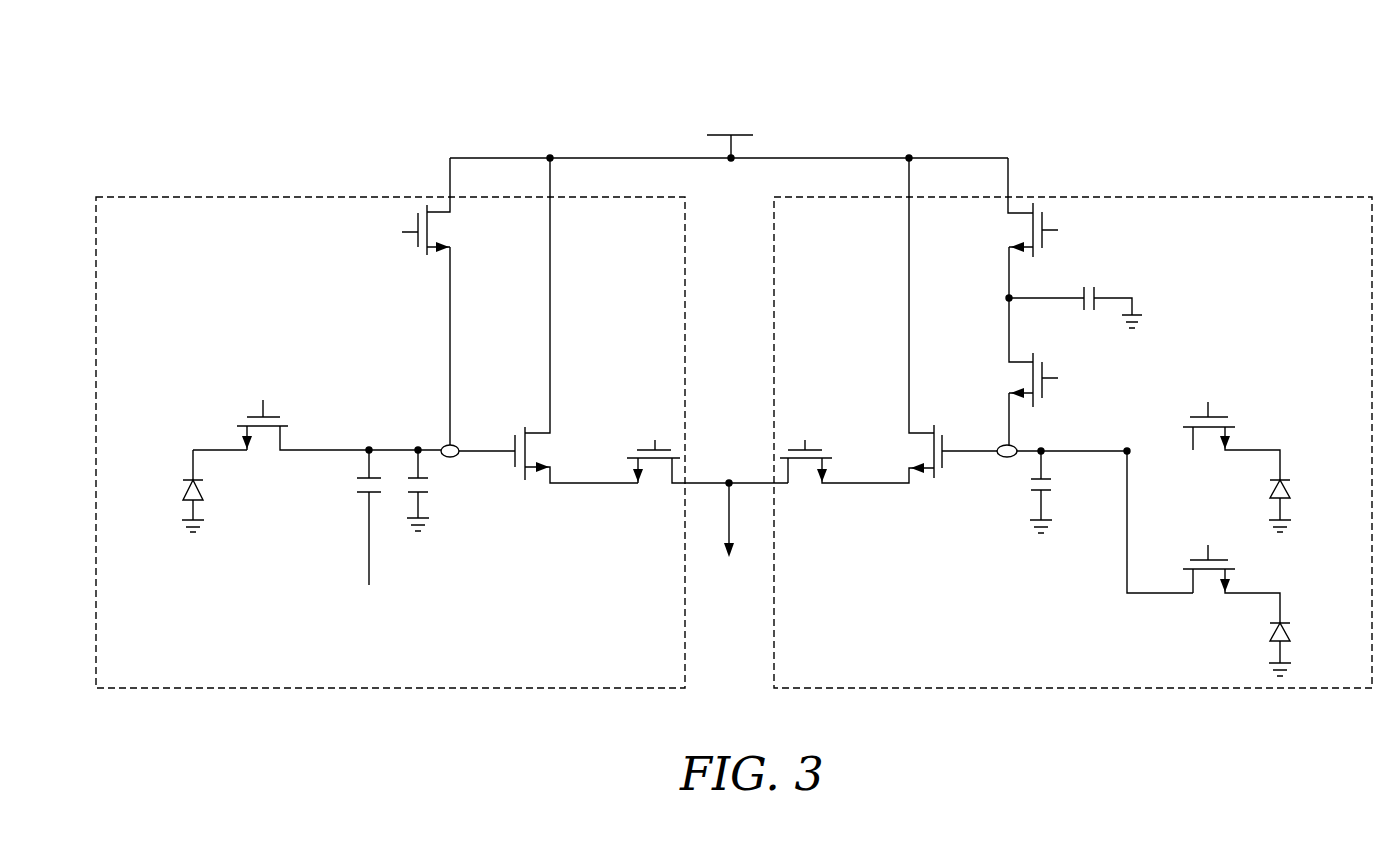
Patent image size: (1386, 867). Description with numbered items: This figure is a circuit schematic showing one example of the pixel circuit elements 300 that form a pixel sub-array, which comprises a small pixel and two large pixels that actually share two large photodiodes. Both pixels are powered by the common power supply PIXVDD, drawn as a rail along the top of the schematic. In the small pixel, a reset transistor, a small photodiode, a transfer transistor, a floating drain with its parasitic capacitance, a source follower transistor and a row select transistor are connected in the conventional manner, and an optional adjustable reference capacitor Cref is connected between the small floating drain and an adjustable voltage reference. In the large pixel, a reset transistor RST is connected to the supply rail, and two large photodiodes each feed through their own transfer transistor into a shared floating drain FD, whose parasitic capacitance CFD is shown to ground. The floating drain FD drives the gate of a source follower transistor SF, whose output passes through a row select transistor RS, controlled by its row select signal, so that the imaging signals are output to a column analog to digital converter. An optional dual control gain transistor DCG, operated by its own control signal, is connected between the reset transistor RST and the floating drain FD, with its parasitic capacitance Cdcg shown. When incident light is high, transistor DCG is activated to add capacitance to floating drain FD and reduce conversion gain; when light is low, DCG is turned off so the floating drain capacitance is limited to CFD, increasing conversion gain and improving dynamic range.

The pixel circuit elements 300 is at (309, 91).
The power supply PIXVDD is at (729, 141).
The adjustable reference capacitor Cref is at (344, 516).
The row select transistor RS is at (857, 459).
The source follower transistor SF is at (938, 318).
The floating drain FD is at (996, 466).
The parasitic capacitance CFD is at (1067, 492).
The dual control gain transistor DCG is at (1031, 327).
The reset transistor RST is at (1024, 207).
The parasitic capacitance Cdcg is at (1079, 294).